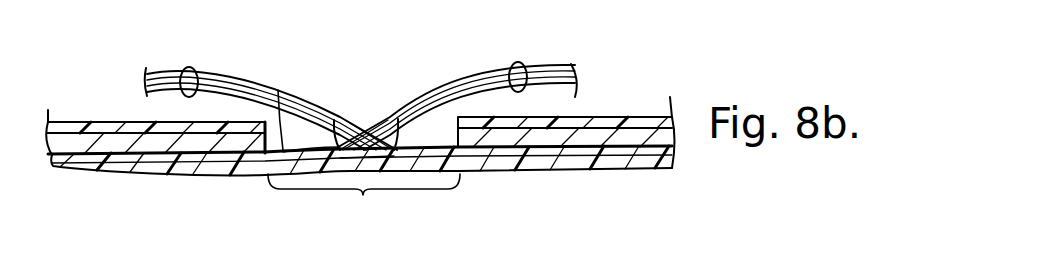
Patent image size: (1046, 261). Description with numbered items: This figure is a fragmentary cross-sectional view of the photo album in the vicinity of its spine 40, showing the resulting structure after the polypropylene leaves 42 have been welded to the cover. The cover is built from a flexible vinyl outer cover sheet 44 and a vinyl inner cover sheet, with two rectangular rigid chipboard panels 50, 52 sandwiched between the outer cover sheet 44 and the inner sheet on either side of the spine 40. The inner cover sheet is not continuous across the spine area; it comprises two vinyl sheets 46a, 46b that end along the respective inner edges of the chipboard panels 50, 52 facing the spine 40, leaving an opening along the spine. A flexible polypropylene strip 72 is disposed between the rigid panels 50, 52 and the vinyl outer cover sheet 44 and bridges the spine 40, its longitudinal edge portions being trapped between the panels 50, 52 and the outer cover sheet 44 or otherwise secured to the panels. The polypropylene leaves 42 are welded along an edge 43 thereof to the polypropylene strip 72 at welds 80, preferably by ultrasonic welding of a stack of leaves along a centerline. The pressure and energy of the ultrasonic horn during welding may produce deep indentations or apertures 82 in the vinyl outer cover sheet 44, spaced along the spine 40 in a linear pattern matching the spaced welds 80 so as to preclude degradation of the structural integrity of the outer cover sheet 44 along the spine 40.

The spine 40 is at (364, 198).
The polypropylene pages or leaves 42 is at (188, 67).
The edge of leaves 43 is at (340, 126).
The outer cover sheet 44 is at (145, 168).
The vinyl sheet 46a is at (568, 124).
The vinyl sheet 46b is at (73, 127).
The rigid panel 50 is at (630, 138).
The rigid panel 52 is at (132, 145).
The polypropylene strip 72 is at (287, 110).
The welds 80 is at (360, 132).
The indentations or apertures 82 is at (365, 157).